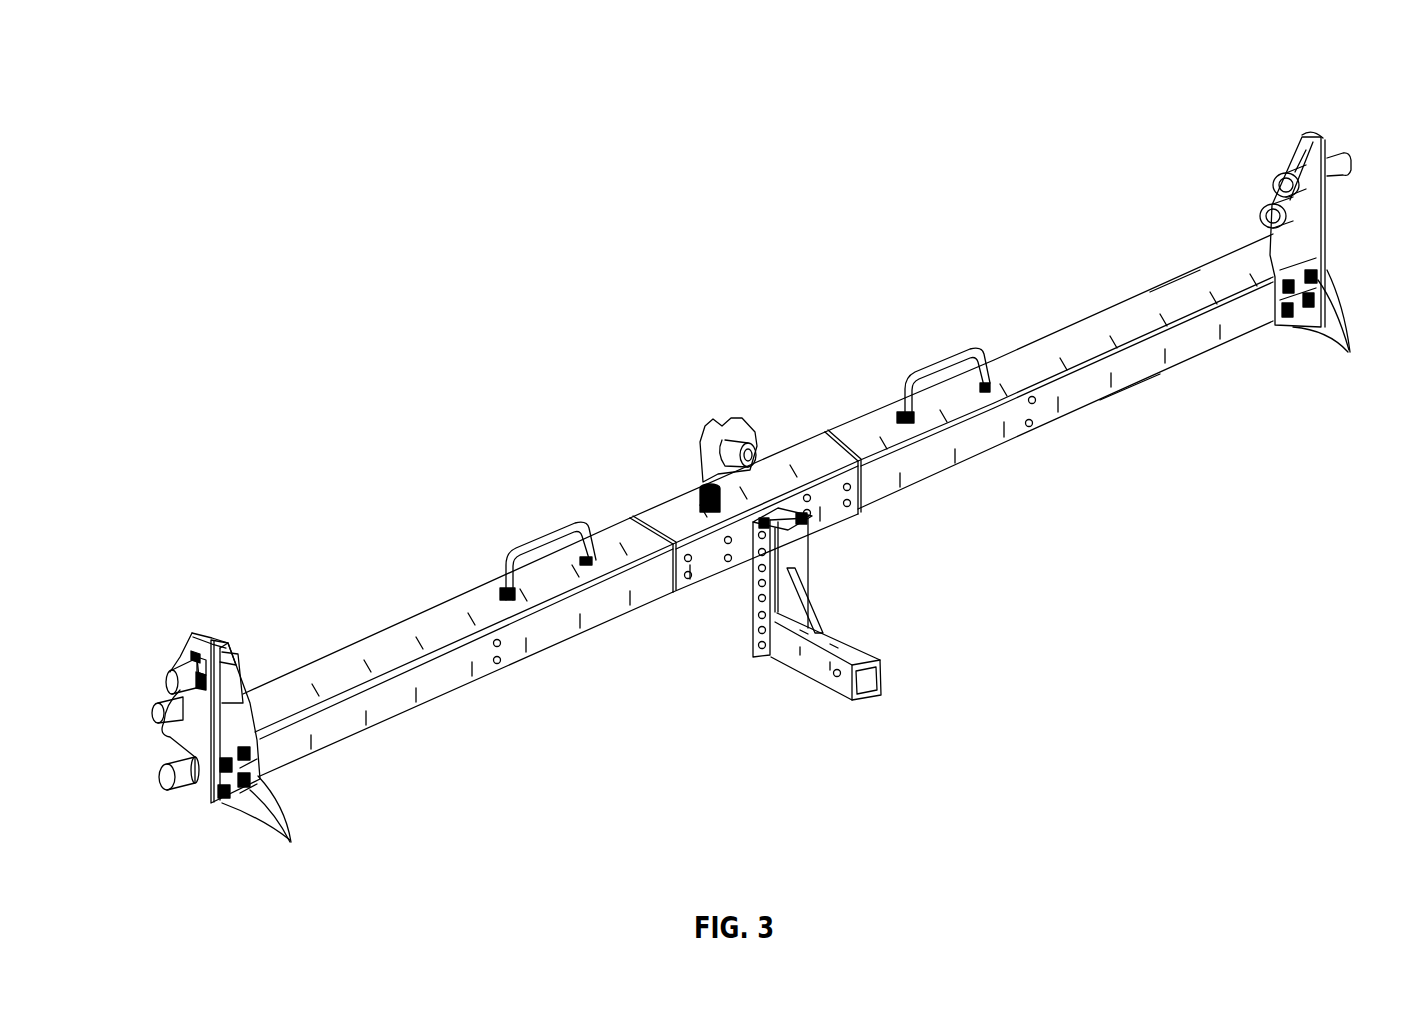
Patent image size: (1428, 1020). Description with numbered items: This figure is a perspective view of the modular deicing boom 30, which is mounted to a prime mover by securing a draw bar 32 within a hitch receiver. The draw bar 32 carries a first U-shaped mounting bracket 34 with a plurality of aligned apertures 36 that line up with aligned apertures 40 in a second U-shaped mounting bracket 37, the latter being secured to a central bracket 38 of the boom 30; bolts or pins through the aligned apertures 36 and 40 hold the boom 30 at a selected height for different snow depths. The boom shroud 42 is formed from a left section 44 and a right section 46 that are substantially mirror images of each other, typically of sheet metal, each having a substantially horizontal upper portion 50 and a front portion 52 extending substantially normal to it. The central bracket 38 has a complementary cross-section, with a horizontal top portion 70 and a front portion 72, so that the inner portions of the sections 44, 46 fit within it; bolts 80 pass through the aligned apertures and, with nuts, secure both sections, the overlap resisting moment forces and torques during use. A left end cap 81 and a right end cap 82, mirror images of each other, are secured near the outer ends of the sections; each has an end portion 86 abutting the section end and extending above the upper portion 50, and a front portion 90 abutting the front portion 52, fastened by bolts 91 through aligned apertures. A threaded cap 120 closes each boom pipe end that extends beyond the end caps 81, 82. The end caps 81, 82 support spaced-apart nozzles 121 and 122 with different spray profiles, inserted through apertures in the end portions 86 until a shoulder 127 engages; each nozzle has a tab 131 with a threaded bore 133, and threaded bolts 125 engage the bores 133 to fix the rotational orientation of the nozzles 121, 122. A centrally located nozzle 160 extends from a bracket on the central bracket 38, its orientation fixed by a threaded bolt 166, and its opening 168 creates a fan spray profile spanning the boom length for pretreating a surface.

The boom 30 is at (547, 462).
The draw bar 32 is at (845, 698).
The first U-shaped mounting bracket 34 is at (803, 550).
The aligned apertures 36 is at (764, 646).
The second U-shaped mounting bracket 37 is at (778, 528).
The central bracket 38 is at (797, 445).
The aligned apertures 40 is at (792, 524).
The boom shroud 42 is at (472, 585).
The left section 44 is at (1122, 298).
The right section 46 is at (391, 640).
The horizontal upper portion 50 is at (1190, 290).
The front portion 52 is at (1140, 373).
The top portion 70 is at (796, 510).
The front portion 72 is at (706, 548).
The bolts 80 is at (728, 562).
The left end cap 81 is at (1320, 128).
The right end cap 82 is at (206, 618).
The end portion 86 is at (1300, 142).
The front portion 90 is at (237, 676).
The bolts 91 is at (272, 830).
The threaded cap 120 is at (184, 786).
The nozzle 121 is at (158, 706).
The nozzle 122 is at (172, 674).
The threaded bolts 125 is at (172, 733).
The shoulder 127 is at (228, 655).
The tab 131 is at (194, 650).
The threaded bore 133 is at (190, 654).
The nozzle 160 is at (722, 420).
The threaded bolt 166 is at (742, 426).
The opening 168 is at (700, 442).